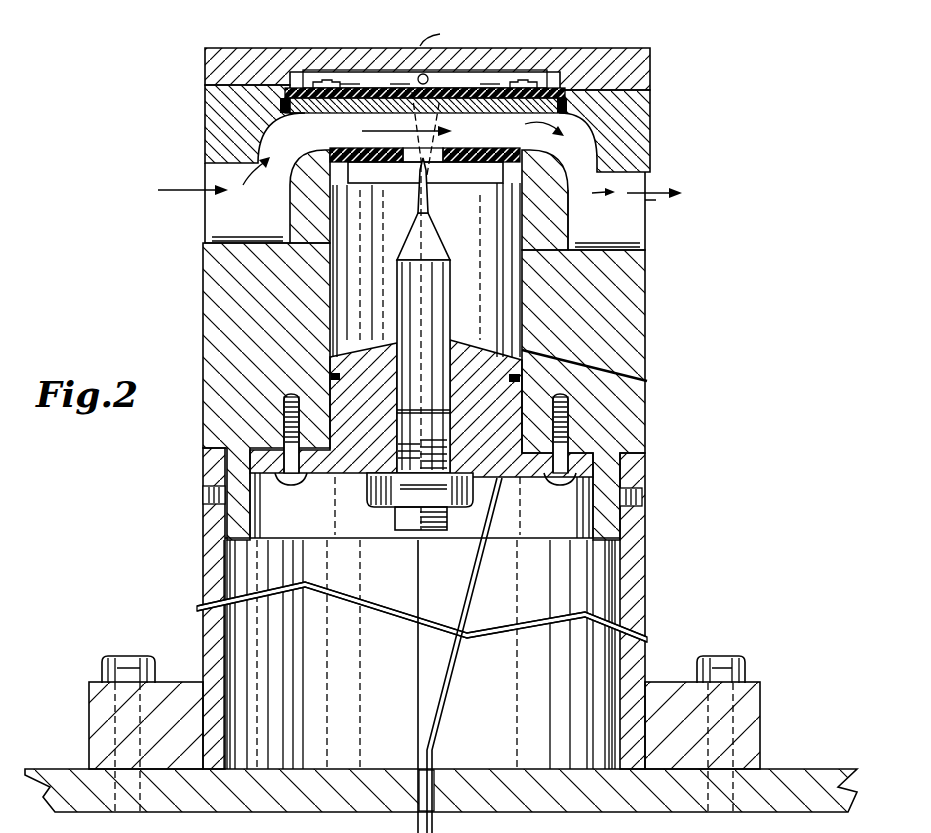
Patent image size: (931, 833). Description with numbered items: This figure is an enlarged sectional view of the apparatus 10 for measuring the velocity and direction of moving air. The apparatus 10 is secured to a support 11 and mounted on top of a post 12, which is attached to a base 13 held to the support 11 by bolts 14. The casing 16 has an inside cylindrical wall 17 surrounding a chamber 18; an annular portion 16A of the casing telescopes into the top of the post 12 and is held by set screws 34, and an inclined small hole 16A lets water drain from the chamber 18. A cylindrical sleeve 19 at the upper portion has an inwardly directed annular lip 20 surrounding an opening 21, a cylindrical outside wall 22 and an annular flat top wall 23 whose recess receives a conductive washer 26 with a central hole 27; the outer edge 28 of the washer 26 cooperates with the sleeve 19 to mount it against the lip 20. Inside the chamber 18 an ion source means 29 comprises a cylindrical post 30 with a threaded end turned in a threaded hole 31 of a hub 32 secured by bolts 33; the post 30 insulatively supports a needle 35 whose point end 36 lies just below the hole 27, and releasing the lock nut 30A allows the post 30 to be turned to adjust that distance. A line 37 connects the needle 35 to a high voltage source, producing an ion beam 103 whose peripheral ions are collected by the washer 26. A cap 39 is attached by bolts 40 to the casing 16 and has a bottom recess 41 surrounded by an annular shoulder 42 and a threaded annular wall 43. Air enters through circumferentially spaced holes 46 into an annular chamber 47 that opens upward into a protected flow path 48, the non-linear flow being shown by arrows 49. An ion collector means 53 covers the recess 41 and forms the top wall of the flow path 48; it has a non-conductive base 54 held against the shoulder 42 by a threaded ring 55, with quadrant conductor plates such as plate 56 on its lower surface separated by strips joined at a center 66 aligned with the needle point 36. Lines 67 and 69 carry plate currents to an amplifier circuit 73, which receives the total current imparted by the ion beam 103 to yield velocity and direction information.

The apparatus 10 is at (750, 79).
The support 11 is at (59, 769).
The post 12 is at (647, 585).
The base 13 is at (762, 712).
The bolts 14 is at (131, 662).
The casing 16 is at (218, 345).
The annular portion of casing 16A is at (648, 379).
The inside cylindrical wall 17 is at (520, 307).
The chamber 18 is at (489, 276).
The sleeve 19 is at (298, 211).
The annular lip 20 is at (340, 186).
The opening 21 is at (378, 186).
The outside wall 22 is at (566, 224).
The top wall 23 is at (560, 197).
The washer 26 is at (481, 148).
The central hole 27 is at (410, 165).
The outer edge 28 is at (453, 83).
The ion source means 29 is at (390, 288).
The cylindrical post 30 is at (430, 366).
The lock nut 30A is at (383, 508).
The threaded hole 31 is at (448, 443).
The hub 32 is at (348, 467).
The bolts 33 is at (423, 461).
The set screws 34 is at (210, 512).
The needle 35 is at (431, 200).
The point end 36 is at (430, 170).
The line 37 is at (417, 661).
The cap 39 is at (243, 57).
The bolts 40 is at (436, 32).
The recess 41 is at (314, 87).
The annular shoulder 42 is at (290, 89).
The threaded annular wall 43 is at (284, 104).
The holes 46 is at (218, 213).
The annular chamber 47 is at (590, 177).
The flow path 48 is at (393, 129).
The arrows 49 is at (178, 193).
The ion collector means 53 is at (492, 93).
The base 54 is at (510, 97).
The ring 55 is at (565, 92).
The conductor plate 56 is at (369, 80).
The center 66 is at (400, 90).
The line 67 is at (349, 84).
The line 69 is at (490, 84).
The amplifier circuit 73 is at (525, 655).
The ion beam 103 is at (432, 128).